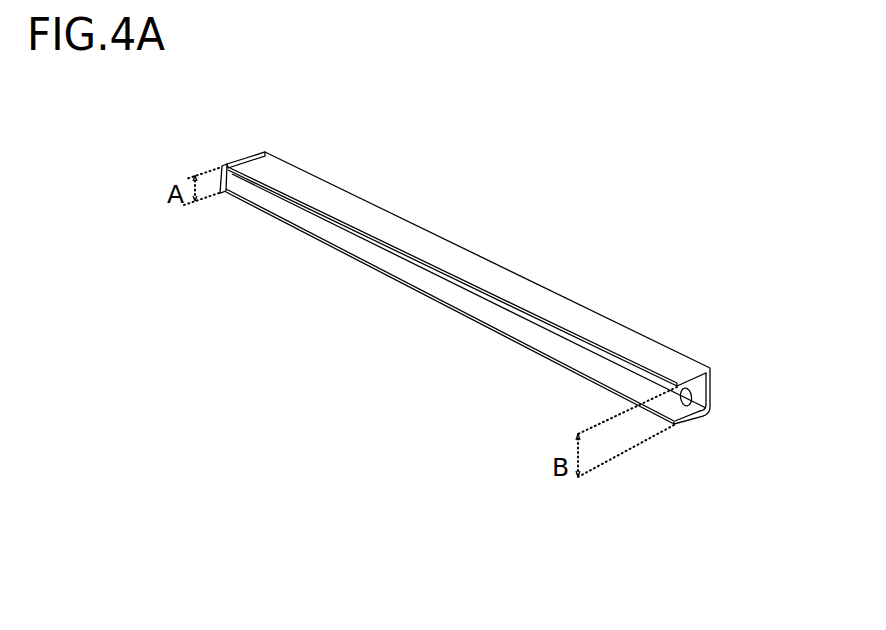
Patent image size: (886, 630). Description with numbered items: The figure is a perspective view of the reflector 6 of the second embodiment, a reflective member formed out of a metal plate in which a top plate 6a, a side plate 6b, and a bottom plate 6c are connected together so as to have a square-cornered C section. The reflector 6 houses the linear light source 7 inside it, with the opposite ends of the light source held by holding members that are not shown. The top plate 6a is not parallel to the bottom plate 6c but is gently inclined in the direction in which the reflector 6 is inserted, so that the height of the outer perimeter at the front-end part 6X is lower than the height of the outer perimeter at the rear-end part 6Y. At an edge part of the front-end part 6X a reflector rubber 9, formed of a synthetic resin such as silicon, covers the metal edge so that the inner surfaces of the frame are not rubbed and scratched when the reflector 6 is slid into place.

The reflector 6 is at (496, 283).
The top plate 6a is at (468, 248).
The side plate 6b is at (708, 393).
The bottom plate 6c is at (438, 288).
The front-end part 6X is at (218, 196).
The rear-end part 6Y is at (707, 372).
The linear light source 7 is at (548, 346).
The reflector rubber 9 is at (246, 158).